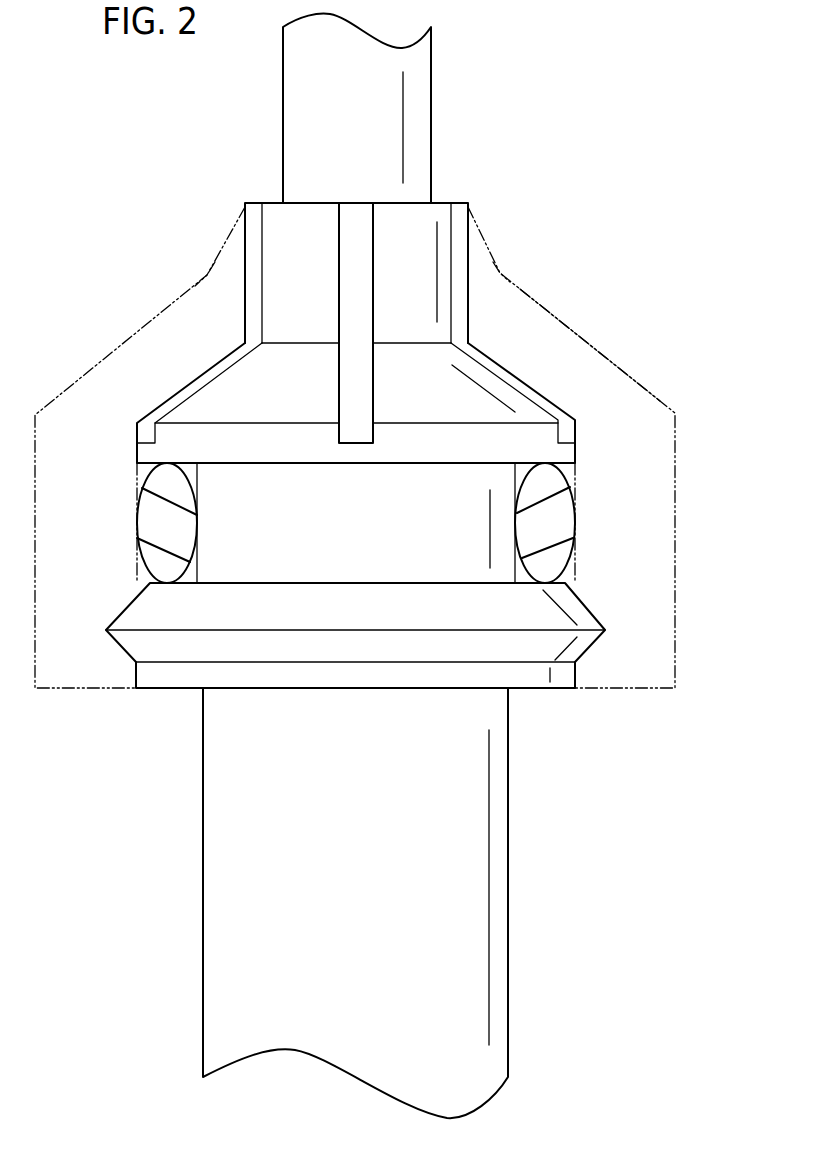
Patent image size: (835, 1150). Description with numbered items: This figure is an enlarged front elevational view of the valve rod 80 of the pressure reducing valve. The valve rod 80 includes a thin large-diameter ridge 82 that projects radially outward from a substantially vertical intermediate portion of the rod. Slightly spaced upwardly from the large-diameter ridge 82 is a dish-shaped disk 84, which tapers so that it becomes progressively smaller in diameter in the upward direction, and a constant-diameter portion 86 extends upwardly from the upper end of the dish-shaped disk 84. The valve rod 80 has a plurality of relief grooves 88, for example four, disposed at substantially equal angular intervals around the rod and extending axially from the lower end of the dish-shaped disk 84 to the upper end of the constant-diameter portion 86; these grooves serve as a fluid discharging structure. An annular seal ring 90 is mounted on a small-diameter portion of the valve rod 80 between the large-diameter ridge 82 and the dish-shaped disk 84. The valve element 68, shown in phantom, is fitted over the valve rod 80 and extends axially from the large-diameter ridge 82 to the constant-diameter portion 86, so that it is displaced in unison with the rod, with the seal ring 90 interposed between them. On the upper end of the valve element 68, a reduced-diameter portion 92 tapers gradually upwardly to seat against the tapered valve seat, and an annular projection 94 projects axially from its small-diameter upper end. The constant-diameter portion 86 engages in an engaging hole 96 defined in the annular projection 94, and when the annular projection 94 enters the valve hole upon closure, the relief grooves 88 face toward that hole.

The valve element 68 is at (670, 478).
The valve rod 80 is at (431, 97).
The large-diameter ridge 82 is at (356, 645).
The dish-shaped disk 84 is at (210, 402).
The constant-diameter portion 86 is at (277, 322).
The relief grooves 88 is at (260, 222).
The seal ring 90 is at (558, 523).
The reduced-diameter portion 92 is at (598, 353).
The annular projection 94 is at (488, 268).
The engaging hole 96 is at (268, 294).